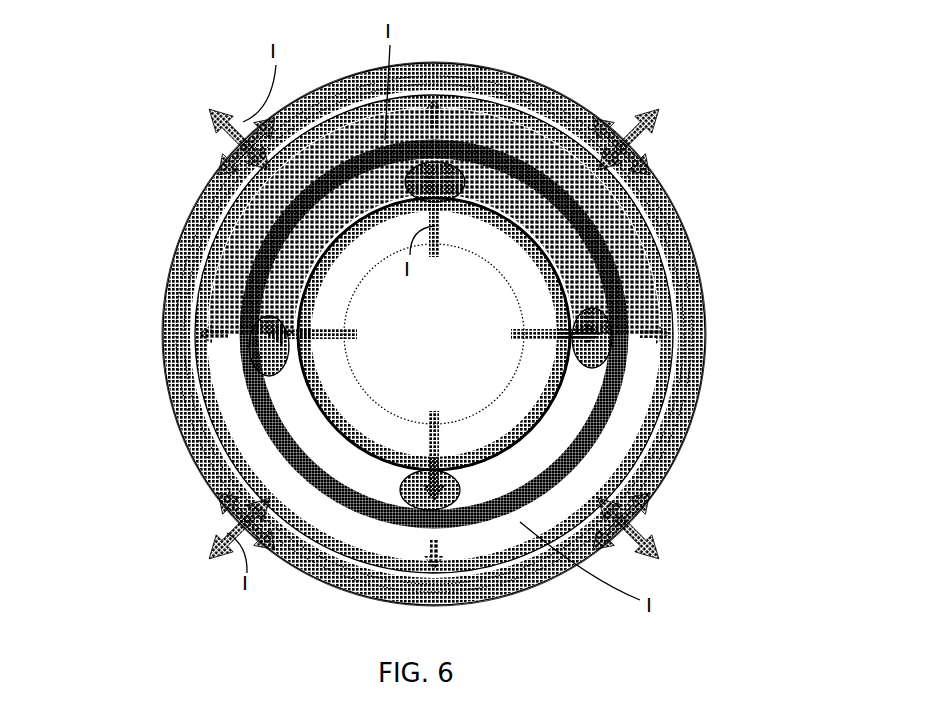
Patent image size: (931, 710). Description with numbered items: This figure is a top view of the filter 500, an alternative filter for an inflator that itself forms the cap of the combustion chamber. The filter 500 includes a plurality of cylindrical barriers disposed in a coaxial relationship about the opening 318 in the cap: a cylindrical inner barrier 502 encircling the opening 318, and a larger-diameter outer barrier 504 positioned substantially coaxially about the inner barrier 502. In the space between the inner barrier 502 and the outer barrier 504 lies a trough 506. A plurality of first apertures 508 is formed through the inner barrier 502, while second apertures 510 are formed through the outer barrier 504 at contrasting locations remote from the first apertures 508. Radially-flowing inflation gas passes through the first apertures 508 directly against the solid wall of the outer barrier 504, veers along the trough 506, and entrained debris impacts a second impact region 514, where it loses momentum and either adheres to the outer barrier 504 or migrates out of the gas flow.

The filter 500 is at (157, 96).
The inner barrier 502 is at (284, 446).
The outer barrier 504 is at (154, 364).
The trough 506 is at (214, 320).
The first apertures 508 is at (302, 330).
The second apertures 510 is at (622, 514).
The second impact region 514 is at (449, 86).
The opening 318 is at (492, 361).